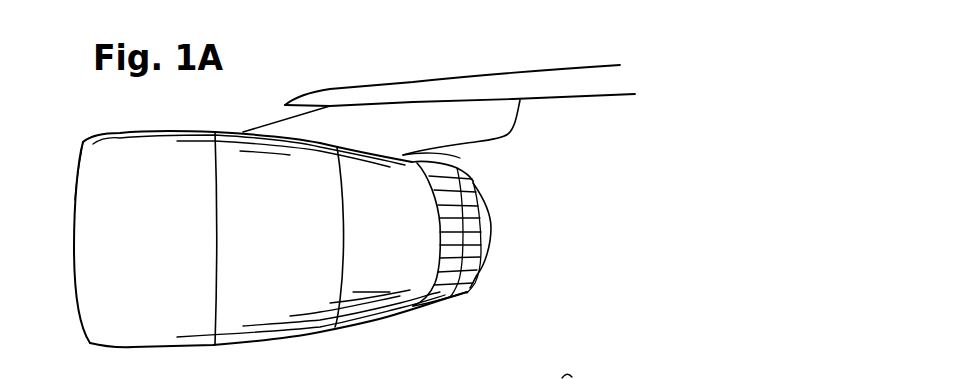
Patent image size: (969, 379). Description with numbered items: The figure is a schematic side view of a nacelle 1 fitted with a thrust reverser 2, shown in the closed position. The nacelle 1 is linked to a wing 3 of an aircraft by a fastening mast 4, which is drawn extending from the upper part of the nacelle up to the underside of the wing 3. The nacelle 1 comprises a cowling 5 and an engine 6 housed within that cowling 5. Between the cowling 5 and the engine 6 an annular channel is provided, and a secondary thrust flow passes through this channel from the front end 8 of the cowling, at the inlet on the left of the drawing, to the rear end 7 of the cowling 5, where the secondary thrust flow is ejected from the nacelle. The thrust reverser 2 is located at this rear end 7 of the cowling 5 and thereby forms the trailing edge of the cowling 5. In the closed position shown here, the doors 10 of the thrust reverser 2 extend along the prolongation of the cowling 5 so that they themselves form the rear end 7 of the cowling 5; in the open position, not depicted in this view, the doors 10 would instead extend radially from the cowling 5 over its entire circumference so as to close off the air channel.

The nacelle 1 is at (50, 240).
The thrust reverser 2 is at (417, 227).
The wing 3 is at (564, 66).
The fastening mast 4 is at (385, 137).
The cowling 5 is at (125, 225).
The engine 6 is at (487, 235).
The rear end of the cowling 7 is at (442, 155).
The front end of the cowling 8 is at (110, 172).
The doors 10 is at (467, 203).